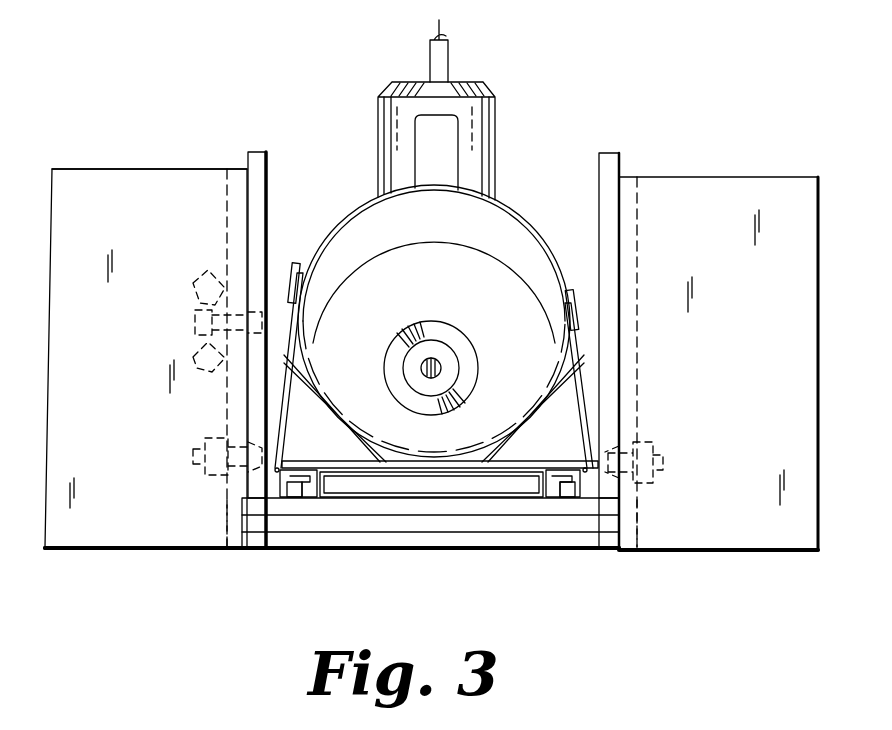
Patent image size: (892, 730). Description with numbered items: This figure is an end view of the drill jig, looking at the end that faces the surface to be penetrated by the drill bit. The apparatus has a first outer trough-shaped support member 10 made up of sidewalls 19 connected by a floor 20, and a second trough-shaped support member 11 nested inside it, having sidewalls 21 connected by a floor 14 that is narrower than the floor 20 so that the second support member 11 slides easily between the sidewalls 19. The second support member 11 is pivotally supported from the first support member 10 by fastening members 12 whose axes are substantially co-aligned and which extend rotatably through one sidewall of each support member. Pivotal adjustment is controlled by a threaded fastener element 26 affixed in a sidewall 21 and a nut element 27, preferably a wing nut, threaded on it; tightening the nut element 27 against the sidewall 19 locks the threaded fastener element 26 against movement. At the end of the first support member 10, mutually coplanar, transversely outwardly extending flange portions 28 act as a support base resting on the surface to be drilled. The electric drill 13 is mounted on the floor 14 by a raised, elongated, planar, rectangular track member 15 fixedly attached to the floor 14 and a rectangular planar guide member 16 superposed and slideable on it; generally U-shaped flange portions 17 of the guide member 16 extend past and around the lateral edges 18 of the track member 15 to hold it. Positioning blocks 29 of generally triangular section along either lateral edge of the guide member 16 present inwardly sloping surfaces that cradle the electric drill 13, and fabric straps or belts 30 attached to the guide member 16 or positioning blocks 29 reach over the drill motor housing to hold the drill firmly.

The first outer trough-shaped support member 10 is at (245, 162).
The second trough-shaped support member 11 is at (261, 134).
The fastening members 12 is at (190, 452).
The electric drill 13 is at (505, 232).
The floor 14 is at (353, 505).
The track member 15 is at (530, 473).
The guide member 16 is at (437, 462).
The flange portions 17 is at (279, 473).
The lateral edges 18 is at (276, 476).
The sidewalls 19 is at (228, 546).
The floor 20 is at (503, 537).
The sidewalls 21 is at (255, 222).
The threaded fastener element 26 is at (195, 322).
The nut element 27 is at (205, 282).
The flange portions 28 is at (88, 187).
The positioning blocks 29 is at (335, 448).
The straps or belts 30 is at (298, 302).